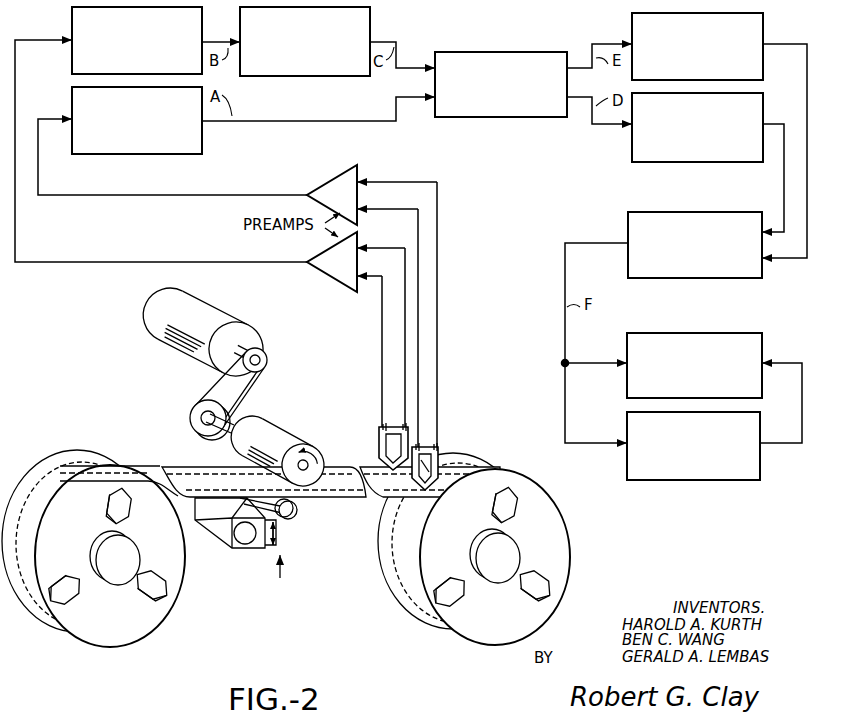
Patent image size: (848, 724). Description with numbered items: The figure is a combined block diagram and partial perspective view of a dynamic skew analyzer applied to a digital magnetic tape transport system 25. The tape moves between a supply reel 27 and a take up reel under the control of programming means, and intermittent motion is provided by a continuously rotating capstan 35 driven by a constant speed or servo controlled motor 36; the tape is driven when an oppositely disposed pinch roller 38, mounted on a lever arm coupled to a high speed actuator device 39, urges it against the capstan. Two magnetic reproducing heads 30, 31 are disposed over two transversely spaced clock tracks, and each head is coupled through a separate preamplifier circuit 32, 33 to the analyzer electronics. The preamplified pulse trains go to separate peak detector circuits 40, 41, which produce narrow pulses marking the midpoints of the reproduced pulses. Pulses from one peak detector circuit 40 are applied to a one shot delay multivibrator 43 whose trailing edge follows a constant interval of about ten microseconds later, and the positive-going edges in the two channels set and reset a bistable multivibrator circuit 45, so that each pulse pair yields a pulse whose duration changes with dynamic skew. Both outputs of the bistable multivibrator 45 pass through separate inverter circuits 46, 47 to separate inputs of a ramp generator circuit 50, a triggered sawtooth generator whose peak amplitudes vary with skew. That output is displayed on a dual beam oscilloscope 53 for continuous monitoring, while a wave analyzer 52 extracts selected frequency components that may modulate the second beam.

The magnetic tape transport system 25 is at (280, 575).
The supply reel 27 is at (143, 627).
The magnetic reproducing head 30 is at (379, 434).
The magnetic reproducing head 31 is at (437, 456).
The preamplifier circuit 32 is at (340, 285).
The preamplifier circuit 33 is at (345, 176).
The capstan 35 is at (285, 425).
The motor 36 is at (152, 303).
The pinch roller 38 is at (298, 506).
The high speed actuator device 39 is at (232, 548).
The peak detector circuit 40 is at (72, 20).
The peak detector circuit 41 is at (72, 100).
The one shot delay multivibrator 43 is at (240, 20).
The bistable multivibrator circuit 45 is at (440, 52).
The inverter circuit 46 is at (632, 20).
The inverter circuit 47 is at (632, 152).
The ramp generator circuit 50 is at (628, 263).
The wave analyzer 52 is at (627, 420).
The dual beam oscilloscope 53 is at (627, 340).